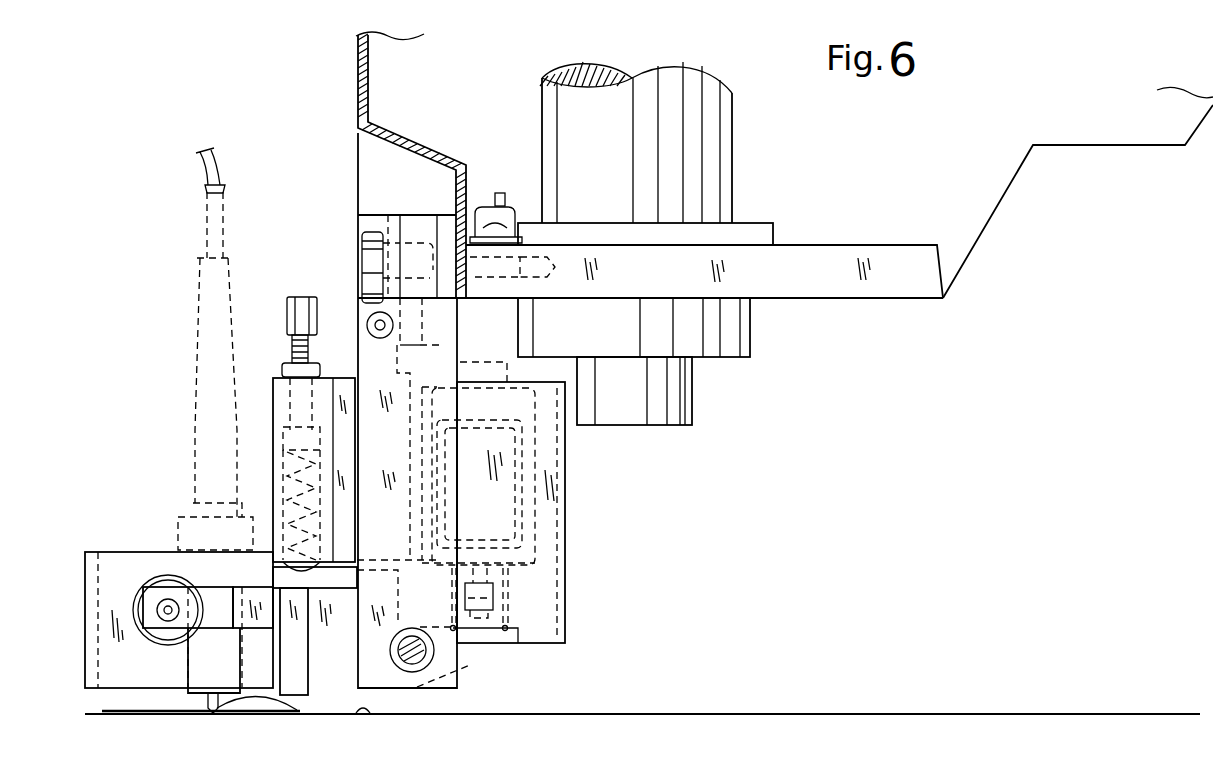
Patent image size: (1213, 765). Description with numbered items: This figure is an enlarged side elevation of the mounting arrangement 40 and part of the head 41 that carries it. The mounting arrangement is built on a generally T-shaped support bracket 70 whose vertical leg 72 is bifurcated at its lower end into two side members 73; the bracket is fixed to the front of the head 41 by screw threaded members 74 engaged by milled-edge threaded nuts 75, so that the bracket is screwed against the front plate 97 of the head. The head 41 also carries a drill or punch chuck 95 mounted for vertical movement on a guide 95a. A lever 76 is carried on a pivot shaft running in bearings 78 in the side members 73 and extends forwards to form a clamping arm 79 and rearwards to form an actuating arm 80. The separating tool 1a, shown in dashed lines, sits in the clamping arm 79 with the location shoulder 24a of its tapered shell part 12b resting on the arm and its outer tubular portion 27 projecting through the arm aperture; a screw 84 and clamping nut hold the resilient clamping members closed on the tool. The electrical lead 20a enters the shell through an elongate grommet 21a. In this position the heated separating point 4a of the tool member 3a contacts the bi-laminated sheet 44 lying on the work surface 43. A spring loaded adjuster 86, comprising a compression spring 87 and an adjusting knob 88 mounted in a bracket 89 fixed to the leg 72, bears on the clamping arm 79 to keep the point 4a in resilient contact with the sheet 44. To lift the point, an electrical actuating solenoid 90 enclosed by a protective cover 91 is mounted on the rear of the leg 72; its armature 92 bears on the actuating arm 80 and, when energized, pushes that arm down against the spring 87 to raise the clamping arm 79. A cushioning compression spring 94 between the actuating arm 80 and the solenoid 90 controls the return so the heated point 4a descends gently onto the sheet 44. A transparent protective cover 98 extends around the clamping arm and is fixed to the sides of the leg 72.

The head 41 is at (385, 80).
The front plate 97 is at (358, 151).
The milled-edge threaded nut 75 is at (371, 250).
The screw threaded member 74 is at (362, 238).
The support bracket 70 is at (355, 307).
The leg 72 is at (392, 470).
The side member 73 is at (392, 610).
The adjusting knob 88 is at (288, 310).
The bracket 89 is at (325, 387).
The spring loaded adjuster 86 is at (264, 451).
The compression spring 87 is at (287, 492).
The protective cover 98 is at (87, 552).
The lever 76 is at (262, 550).
The location shoulder 24a is at (247, 583).
The clamping arm 79 is at (160, 600).
The screw 84 is at (170, 614).
The outer tubular portion 27 is at (233, 660).
The work surface 43 is at (145, 714).
The separating point 4a is at (213, 713).
The tool member 3a is at (293, 711).
The bi-laminated sheet 44 is at (370, 711).
The separating tool 1a is at (195, 393).
The shell part 12b is at (207, 342).
The elongate grommet 21a is at (207, 230).
The electrical lead 20a is at (222, 168).
The bearing 78 is at (432, 662).
The actuating arm 80 is at (497, 645).
The electrical actuating solenoid 90 is at (522, 485).
The protective cover 91 is at (567, 558).
The armature 92 is at (493, 597).
The cushioning compression spring 94 is at (507, 607).
The mounting arrangement 40 is at (657, 512).
The drill or punch chuck 95 is at (740, 340).
The guide 95a is at (718, 158).